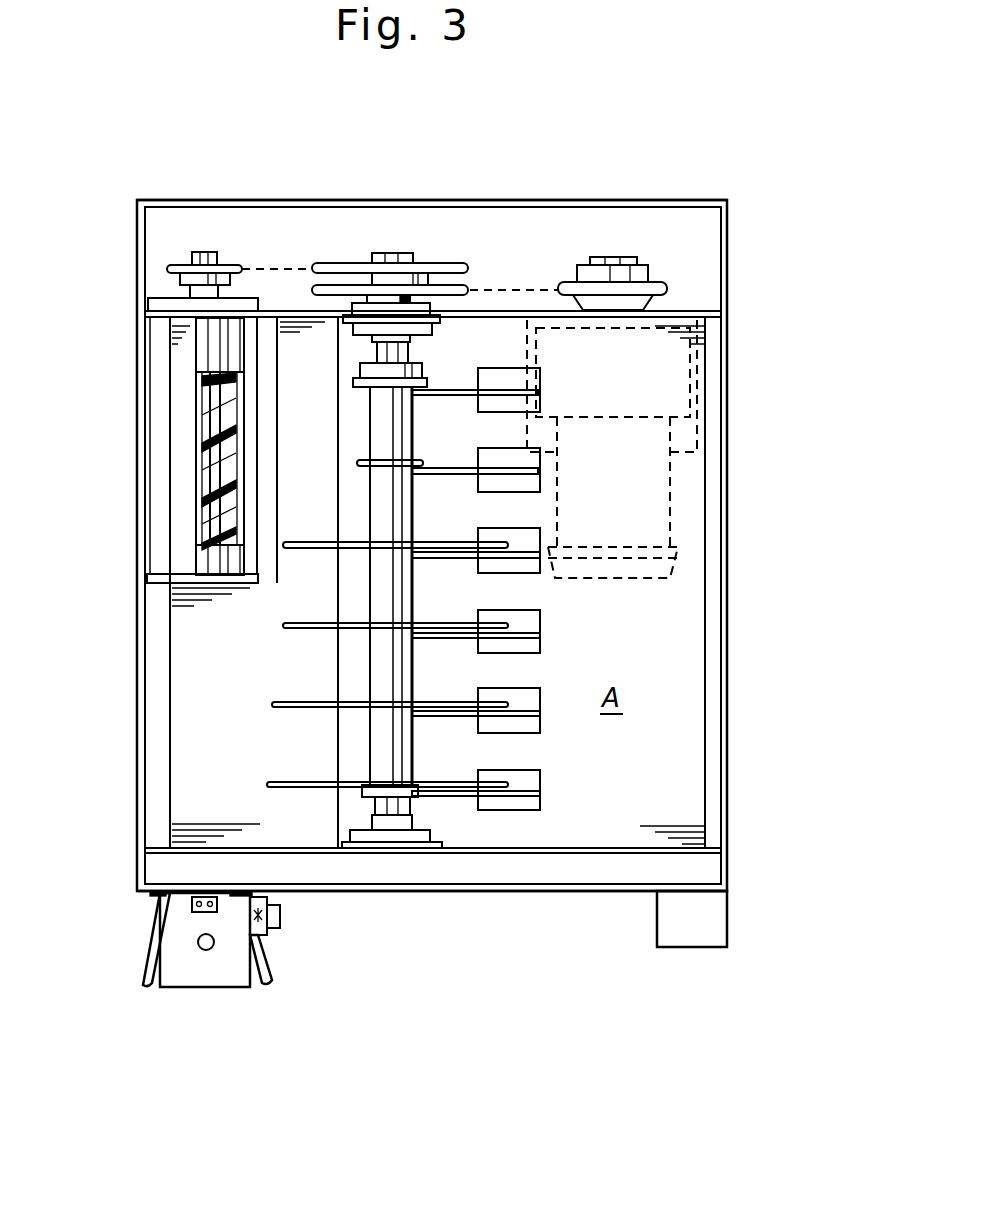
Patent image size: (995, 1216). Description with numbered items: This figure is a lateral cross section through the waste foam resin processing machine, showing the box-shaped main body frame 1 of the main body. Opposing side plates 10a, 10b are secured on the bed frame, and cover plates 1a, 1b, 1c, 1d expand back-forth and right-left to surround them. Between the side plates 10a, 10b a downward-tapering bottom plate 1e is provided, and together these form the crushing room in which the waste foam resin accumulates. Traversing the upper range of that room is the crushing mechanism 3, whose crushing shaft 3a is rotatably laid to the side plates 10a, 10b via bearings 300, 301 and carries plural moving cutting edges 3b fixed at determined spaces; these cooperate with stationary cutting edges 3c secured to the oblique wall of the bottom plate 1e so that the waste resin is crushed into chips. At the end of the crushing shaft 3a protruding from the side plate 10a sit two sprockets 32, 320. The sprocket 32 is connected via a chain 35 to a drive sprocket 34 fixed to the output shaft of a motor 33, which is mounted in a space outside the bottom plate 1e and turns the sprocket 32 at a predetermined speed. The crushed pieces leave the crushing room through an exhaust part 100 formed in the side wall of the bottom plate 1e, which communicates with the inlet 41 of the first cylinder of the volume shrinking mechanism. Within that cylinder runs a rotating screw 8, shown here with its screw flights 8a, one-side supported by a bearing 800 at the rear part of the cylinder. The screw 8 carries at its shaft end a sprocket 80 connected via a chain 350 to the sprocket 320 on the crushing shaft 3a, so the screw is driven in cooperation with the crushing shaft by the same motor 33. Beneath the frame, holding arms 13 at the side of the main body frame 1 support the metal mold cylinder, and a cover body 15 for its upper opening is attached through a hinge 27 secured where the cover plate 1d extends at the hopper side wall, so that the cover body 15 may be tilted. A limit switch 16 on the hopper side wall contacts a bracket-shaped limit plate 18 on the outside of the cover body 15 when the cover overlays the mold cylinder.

The main body frame 1 is at (727, 610).
The cover plate 1a is at (138, 588).
The cover plate 1b is at (728, 525).
The cover plate 1c is at (605, 200).
The cover plate 1d is at (510, 891).
The bottom plate 1e is at (672, 750).
The crushing mechanism 3 is at (335, 737).
The crushing shaft 3a is at (400, 590).
The moving cutting edges 3b is at (378, 386).
The stationary cutting edges 3c is at (453, 392).
The rotating screw 8 is at (207, 411).
The screw flights 8a is at (205, 513).
The side plate 10a is at (672, 313).
The side plate 10b is at (673, 856).
The holding arms 13 is at (155, 960).
The cover body 15 is at (185, 985).
The limit switch 16 is at (246, 940).
The limit plate 18 is at (268, 930).
The hinge 27 is at (190, 905).
The sprocket 32 is at (330, 263).
The motor 33 is at (680, 392).
The drive sprocket 34 is at (672, 290).
The chain 35 is at (527, 289).
The inlet 41 is at (203, 462).
The sprocket 80 is at (167, 269).
The exhaust part 100 is at (260, 368).
The bearing 300 is at (410, 848).
The bearing 301 is at (365, 322).
The sprocket 320 is at (452, 285).
The chain 350 is at (265, 268).
The bearing 800 is at (148, 305).